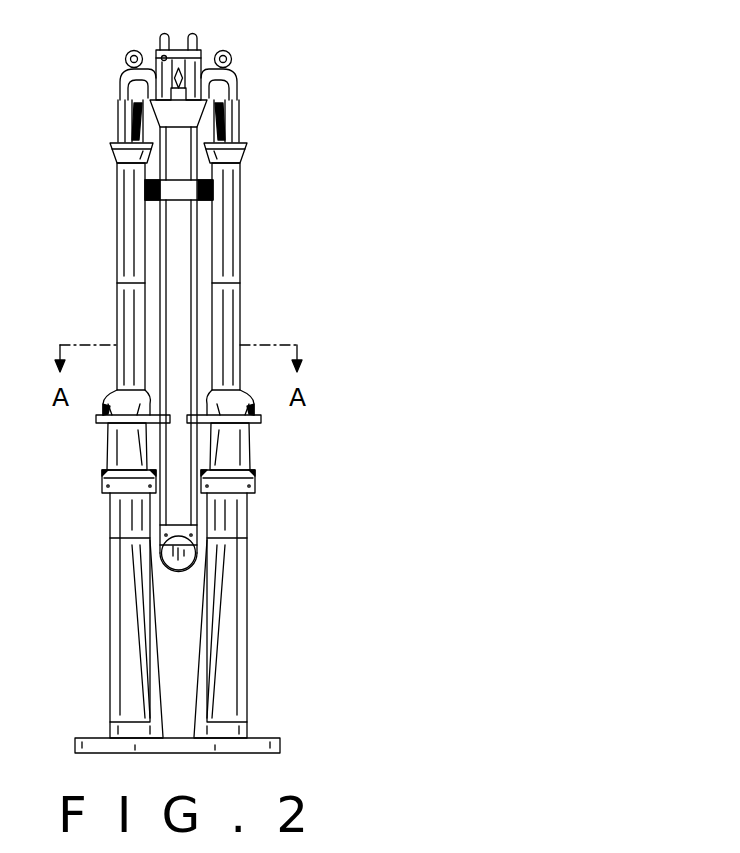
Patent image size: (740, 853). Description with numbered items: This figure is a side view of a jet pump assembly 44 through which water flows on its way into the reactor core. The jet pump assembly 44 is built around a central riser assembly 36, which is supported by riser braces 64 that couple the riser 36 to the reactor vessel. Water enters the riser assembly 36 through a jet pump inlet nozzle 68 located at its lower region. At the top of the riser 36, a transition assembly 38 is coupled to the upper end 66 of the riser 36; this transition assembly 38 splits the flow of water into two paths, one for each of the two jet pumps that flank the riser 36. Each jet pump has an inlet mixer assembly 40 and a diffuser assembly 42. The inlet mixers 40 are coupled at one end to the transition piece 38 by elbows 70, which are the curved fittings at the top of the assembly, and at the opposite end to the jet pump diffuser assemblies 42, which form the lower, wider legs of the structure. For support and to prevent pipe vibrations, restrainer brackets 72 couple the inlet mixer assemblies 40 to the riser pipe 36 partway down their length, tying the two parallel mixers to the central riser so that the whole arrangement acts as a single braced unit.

The riser assembly 36 is at (177, 282).
The transition assembly 38 is at (202, 104).
The inlet mixer assembly 40 is at (117, 208).
The diffuser assembly 42 is at (110, 618).
The jet pump assembly 44 is at (352, 88).
The riser brace 64 is at (130, 160).
The upper end 66 is at (208, 140).
The jet pump inlet nozzle 68 is at (183, 558).
The elbow 70 is at (119, 88).
The restrainer bracket 72 is at (117, 418).